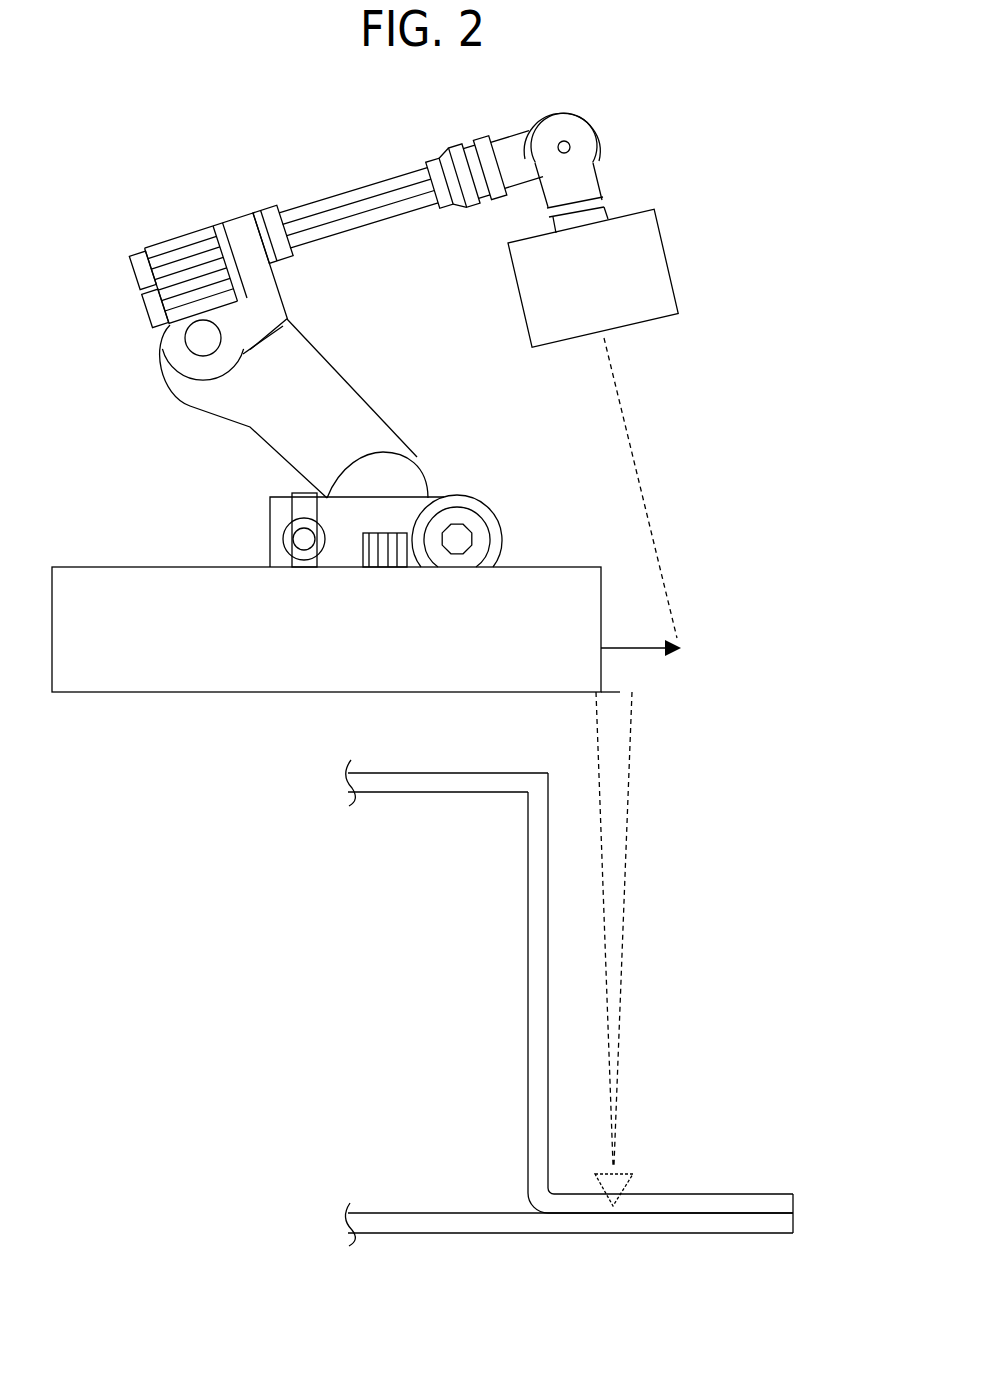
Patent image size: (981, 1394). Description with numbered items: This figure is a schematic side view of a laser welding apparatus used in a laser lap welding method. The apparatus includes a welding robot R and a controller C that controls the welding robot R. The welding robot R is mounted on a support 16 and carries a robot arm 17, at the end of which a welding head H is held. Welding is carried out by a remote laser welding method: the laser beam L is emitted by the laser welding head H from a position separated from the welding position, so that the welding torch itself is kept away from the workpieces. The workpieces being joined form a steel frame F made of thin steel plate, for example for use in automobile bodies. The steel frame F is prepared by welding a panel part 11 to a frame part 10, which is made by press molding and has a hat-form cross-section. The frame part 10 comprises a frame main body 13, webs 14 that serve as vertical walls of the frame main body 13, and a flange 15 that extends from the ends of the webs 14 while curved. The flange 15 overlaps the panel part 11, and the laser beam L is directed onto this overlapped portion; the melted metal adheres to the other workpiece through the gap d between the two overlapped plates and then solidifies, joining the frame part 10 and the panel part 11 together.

The welding robot R is at (170, 228).
The robot arm 17 is at (331, 193).
The support 16 is at (471, 492).
The welding head H is at (651, 263).
The controller C is at (121, 554).
The laser beam L is at (628, 882).
The steel frame F is at (355, 870).
The frame main body 13 is at (407, 771).
The webs 14 is at (548, 964).
The frame part 10 is at (513, 1126).
The flange 15 is at (674, 1200).
The gap d is at (770, 1206).
The panel part 11 is at (411, 1248).